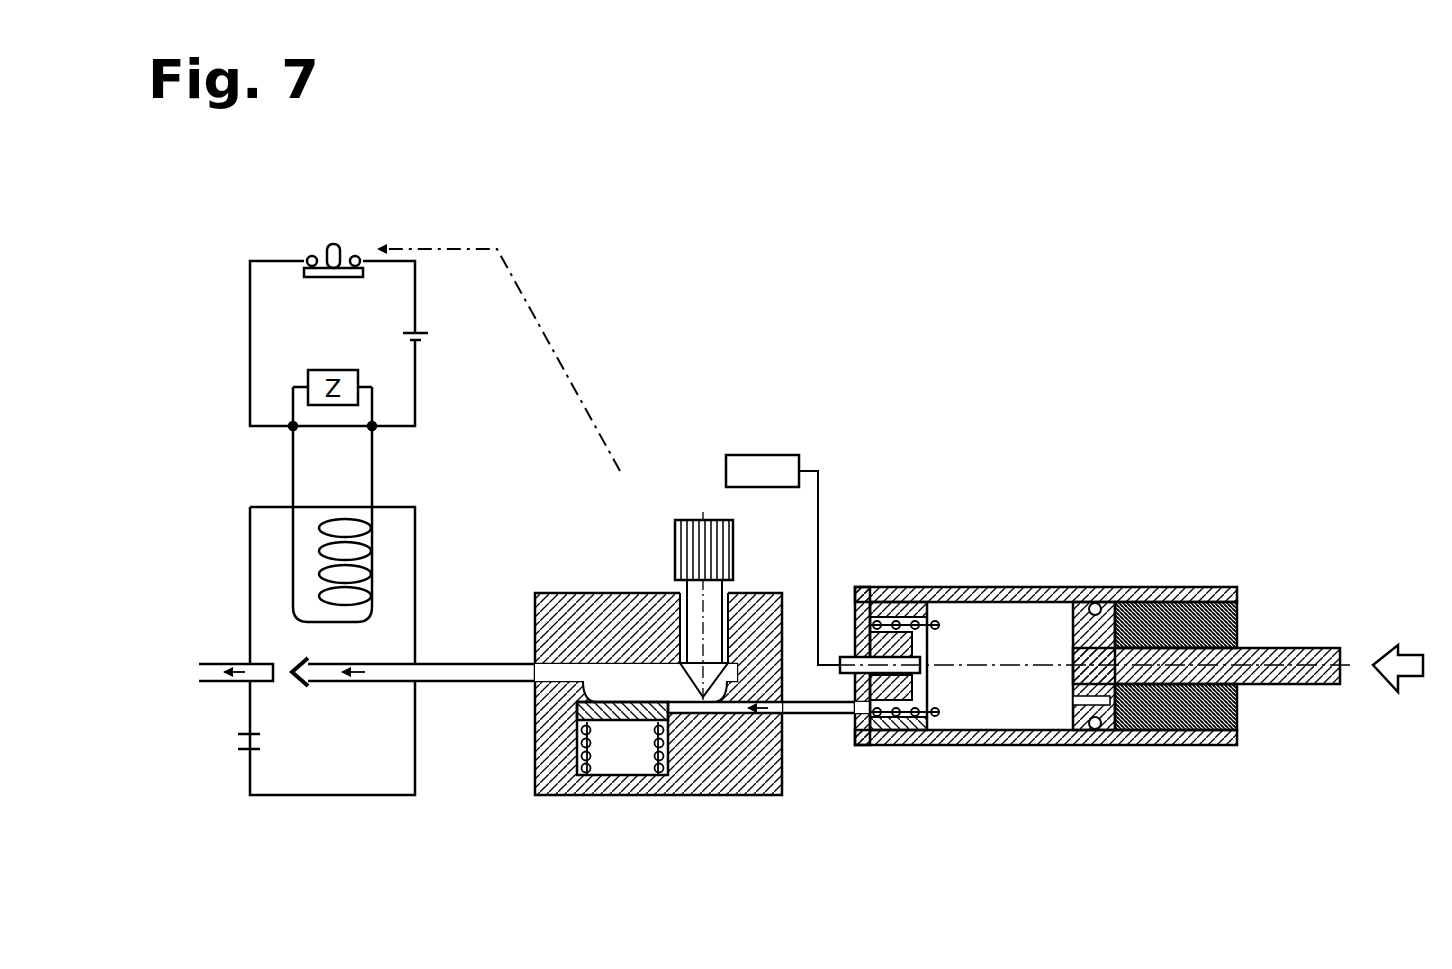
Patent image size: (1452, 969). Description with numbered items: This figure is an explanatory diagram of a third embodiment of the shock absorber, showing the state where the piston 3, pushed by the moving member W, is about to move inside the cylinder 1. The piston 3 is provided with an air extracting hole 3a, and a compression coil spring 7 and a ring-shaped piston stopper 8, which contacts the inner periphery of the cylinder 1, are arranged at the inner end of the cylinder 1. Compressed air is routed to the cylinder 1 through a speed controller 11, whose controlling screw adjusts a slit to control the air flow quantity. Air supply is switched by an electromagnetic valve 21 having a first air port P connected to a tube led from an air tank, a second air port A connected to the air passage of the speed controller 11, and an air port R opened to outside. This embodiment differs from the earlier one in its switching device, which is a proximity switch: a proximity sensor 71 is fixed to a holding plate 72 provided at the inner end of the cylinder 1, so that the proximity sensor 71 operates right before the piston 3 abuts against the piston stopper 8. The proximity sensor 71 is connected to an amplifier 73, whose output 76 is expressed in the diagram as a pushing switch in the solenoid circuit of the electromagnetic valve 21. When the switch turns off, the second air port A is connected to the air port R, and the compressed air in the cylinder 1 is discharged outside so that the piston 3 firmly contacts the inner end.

The cylinder 1 is at (992, 587).
The piston 3 is at (1118, 603).
The air extracting hole 3a is at (1130, 745).
The compression coil spring 7 is at (935, 718).
The piston stopper 8 is at (870, 745).
The speed controller 11 is at (565, 593).
The electromagnetic valve 21 is at (248, 535).
The proximity sensor 71 is at (888, 600).
The holding plate 72 is at (900, 725).
The amplifier 73 is at (757, 475).
The output from the amplifier 76 is at (345, 233).
The first air port P is at (244, 659).
The second air port A is at (424, 654).
The air port opened to outside R is at (241, 762).
The moving member W is at (1401, 661).